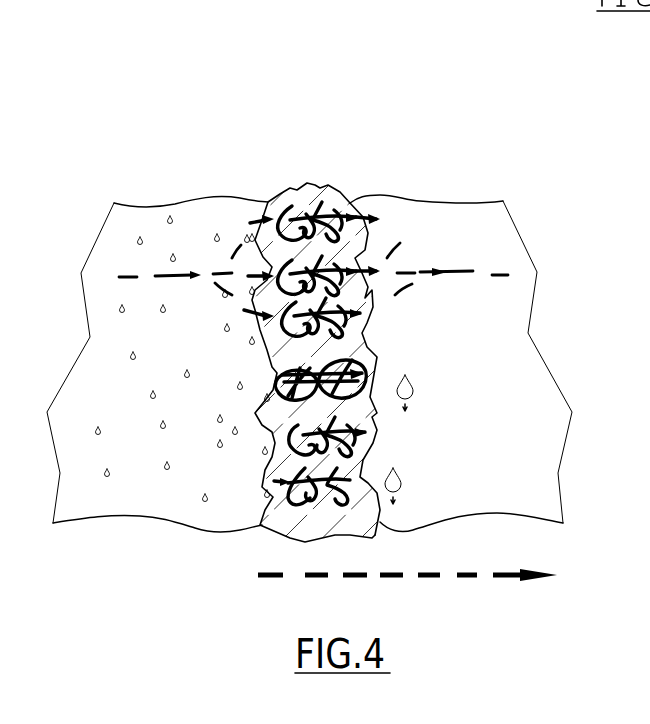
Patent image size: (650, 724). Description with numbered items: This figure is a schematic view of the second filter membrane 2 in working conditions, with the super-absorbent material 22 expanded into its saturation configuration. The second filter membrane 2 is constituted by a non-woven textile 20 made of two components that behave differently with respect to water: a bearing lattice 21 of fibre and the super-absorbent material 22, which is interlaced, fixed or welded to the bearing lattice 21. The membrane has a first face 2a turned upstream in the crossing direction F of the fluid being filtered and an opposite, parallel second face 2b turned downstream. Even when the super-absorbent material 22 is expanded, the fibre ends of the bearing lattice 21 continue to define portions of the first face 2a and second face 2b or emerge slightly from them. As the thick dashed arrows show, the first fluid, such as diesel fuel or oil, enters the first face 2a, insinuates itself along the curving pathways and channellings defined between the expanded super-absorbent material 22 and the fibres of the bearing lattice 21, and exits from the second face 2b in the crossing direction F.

The second filter membrane 2 is at (314, 158).
The first face 2a is at (262, 338).
The second face 2b is at (370, 335).
The non-woven textile 20 is at (322, 205).
The bearing lattice 21 is at (372, 258).
The super-absorbent material 22 is at (352, 355).
The crossing direction F is at (384, 572).